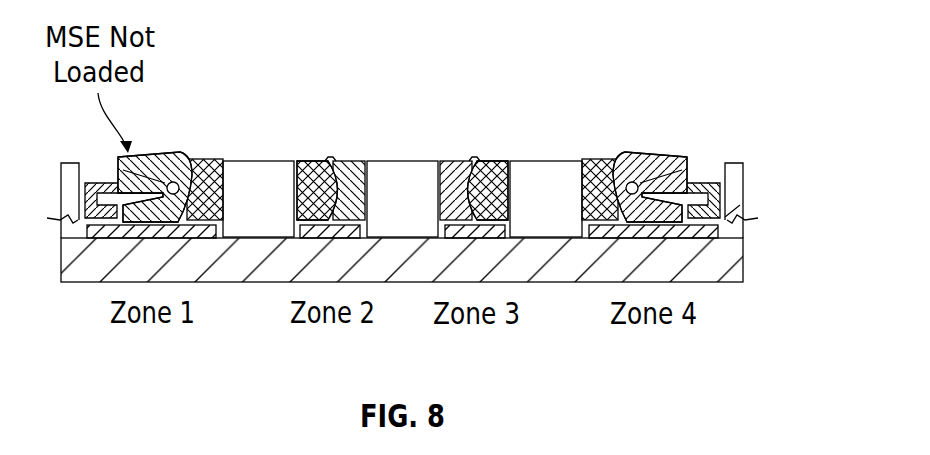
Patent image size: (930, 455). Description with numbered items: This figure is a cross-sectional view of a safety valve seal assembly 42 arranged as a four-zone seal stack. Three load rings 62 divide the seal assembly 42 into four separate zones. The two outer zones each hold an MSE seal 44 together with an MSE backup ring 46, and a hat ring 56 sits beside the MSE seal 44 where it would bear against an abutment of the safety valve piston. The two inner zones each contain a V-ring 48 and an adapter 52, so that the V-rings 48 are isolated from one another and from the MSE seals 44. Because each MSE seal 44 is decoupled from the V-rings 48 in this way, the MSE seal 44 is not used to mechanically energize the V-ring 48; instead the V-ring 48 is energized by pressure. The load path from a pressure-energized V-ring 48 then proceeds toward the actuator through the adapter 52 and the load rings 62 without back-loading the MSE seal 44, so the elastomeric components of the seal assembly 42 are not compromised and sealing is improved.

The seal assembly 42 is at (751, 84).
The MSE seal 44 is at (177, 158).
The MSE backup ring 46 is at (213, 160).
The V-ring 48 is at (345, 165).
The adapter 52 is at (305, 162).
The hat ring 56 is at (698, 183).
The load ring 62 is at (263, 168).